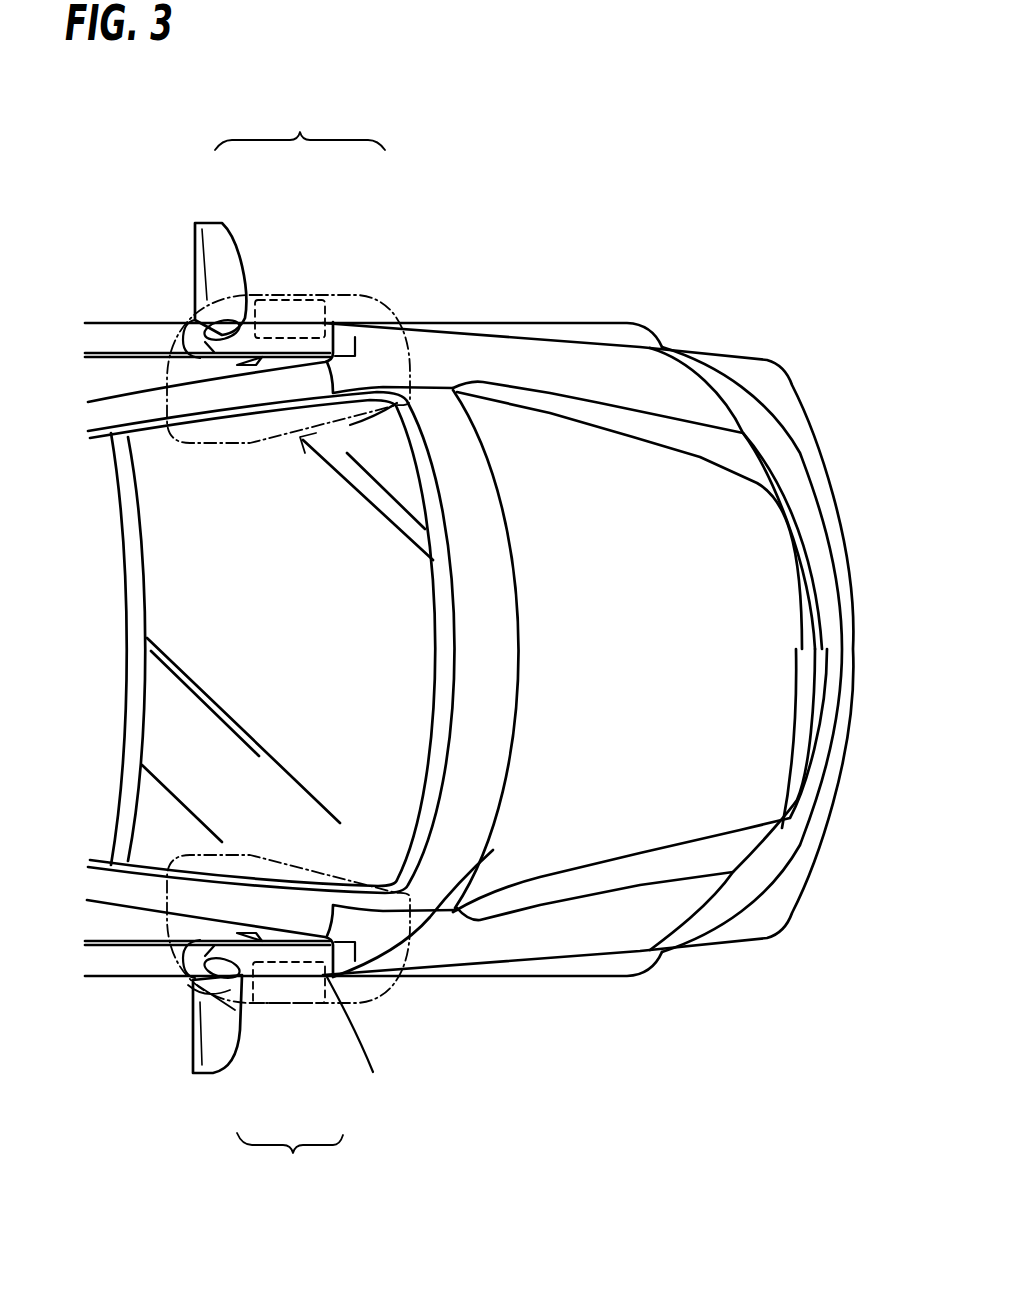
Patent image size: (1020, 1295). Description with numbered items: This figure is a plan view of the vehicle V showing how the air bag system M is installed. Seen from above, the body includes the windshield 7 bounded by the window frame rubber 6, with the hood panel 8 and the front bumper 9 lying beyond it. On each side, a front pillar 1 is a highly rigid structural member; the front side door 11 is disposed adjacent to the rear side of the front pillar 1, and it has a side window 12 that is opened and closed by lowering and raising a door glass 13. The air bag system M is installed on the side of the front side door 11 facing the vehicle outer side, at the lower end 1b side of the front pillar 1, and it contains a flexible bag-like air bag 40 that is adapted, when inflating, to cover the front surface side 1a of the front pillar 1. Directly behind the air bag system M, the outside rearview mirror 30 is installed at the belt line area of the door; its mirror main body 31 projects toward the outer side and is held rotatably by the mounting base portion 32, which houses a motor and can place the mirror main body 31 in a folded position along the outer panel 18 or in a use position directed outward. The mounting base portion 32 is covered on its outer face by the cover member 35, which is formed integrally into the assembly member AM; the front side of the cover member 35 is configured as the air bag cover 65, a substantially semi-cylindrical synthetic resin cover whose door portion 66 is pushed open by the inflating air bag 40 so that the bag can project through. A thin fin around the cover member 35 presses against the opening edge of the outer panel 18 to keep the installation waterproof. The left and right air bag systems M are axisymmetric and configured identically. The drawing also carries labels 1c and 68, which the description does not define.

The front pillar 1 is at (104, 415).
The front surface side 1a is at (202, 407).
The lower end 1b is at (306, 392).
The pillar outer 1c is at (100, 893).
The window frame rubber 6 is at (132, 607).
The windshield 7 is at (407, 663).
The hood panel 8 is at (700, 510).
The front bumper 9 is at (830, 513).
The front side door 11 is at (115, 287).
The side window 12 is at (100, 922).
The door glass 13 is at (171, 651).
The outer panel 18 is at (95, 958).
The outside rearview mirror 30 is at (222, 247).
The mirror main body 31 is at (195, 1040).
The mounting base portion 32 is at (187, 987).
The cover member 35 is at (222, 950).
The air bag 40 is at (384, 300).
The air bag cover 65 is at (493, 850).
The door portion 66 is at (313, 975).
The mirror pivot 68 is at (281, 958).
The air bag system M is at (334, 285).
The assembly member AM is at (300, 645).
The vehicle V is at (645, 230).